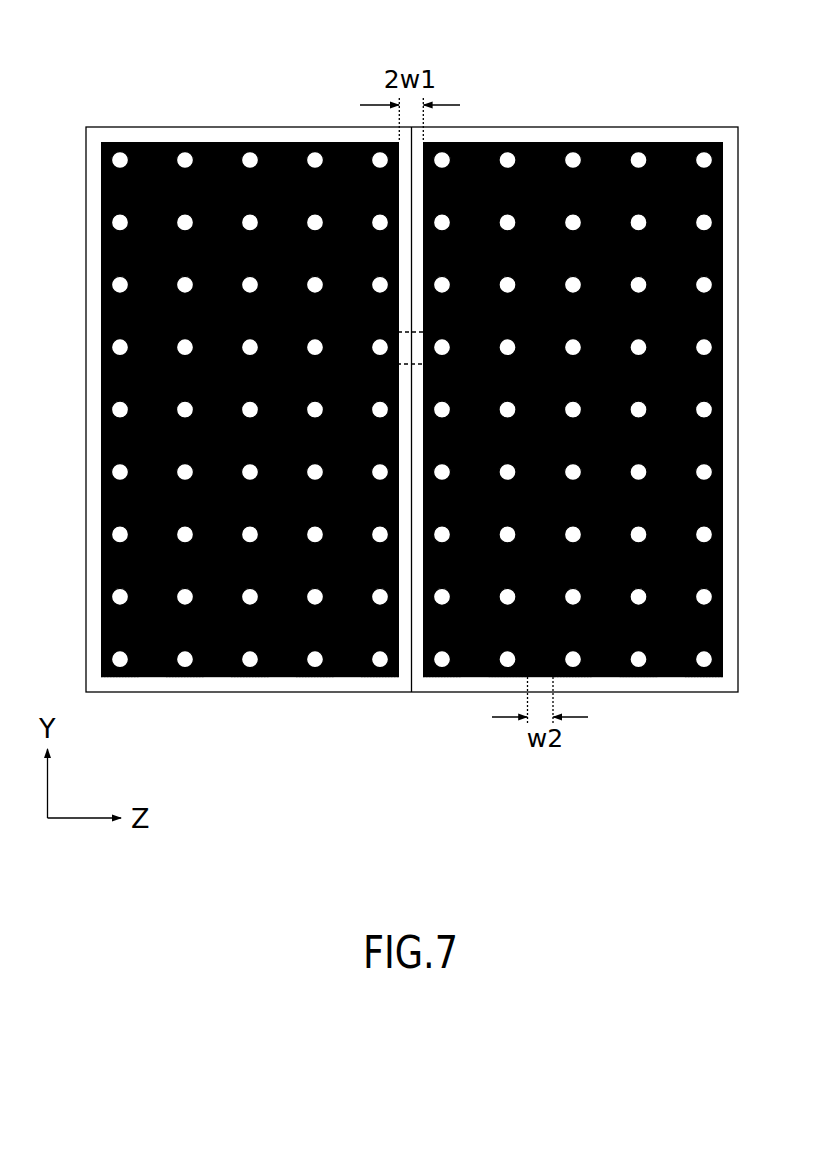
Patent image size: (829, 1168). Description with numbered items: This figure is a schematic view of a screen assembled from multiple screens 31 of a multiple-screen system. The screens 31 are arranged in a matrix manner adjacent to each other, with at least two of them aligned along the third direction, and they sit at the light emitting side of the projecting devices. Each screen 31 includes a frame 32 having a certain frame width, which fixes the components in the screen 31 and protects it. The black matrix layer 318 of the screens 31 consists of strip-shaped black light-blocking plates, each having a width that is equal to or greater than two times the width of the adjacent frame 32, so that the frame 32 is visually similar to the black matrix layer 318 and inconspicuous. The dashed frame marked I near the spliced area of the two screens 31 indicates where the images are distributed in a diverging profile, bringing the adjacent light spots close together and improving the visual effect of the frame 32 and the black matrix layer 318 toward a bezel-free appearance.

The screen 31 is at (198, 72).
The frame 32 is at (521, 128).
The black matrix layer 318 is at (100, 566).
The enlarged region I is at (184, 662).